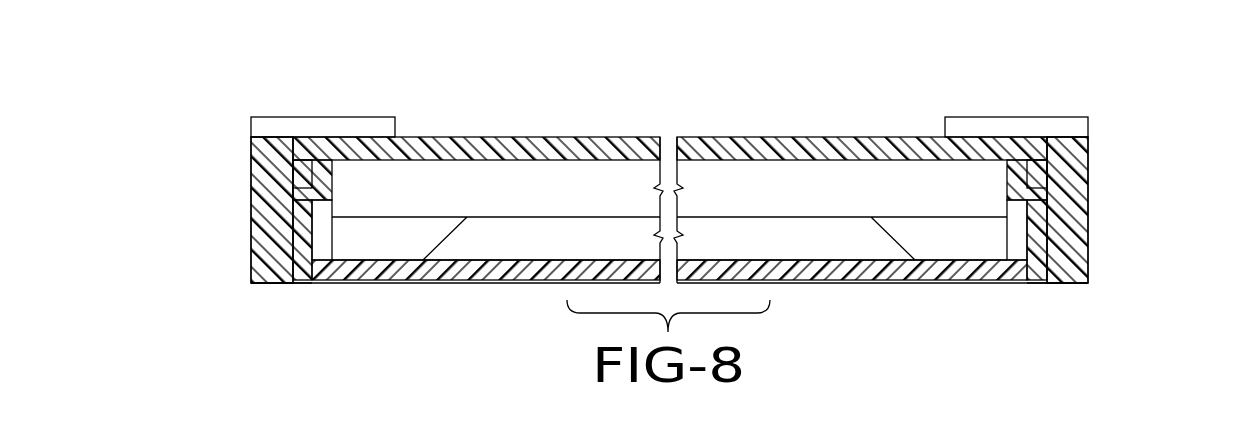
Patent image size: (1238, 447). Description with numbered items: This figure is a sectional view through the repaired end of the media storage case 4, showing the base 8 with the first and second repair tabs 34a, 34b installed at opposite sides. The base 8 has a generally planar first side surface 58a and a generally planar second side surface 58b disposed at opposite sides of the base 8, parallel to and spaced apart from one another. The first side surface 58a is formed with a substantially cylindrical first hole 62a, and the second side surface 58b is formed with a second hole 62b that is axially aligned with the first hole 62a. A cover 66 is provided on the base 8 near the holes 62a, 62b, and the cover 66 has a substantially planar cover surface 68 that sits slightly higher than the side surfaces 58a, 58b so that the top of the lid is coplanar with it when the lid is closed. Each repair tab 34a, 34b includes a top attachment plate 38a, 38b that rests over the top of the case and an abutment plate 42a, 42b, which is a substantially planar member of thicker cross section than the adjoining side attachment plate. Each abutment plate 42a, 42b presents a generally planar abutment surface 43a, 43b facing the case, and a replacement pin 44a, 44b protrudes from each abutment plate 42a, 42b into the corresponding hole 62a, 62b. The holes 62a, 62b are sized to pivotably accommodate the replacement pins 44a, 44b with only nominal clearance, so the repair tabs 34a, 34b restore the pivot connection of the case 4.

The media storage case 4 is at (380, 315).
The base 8 is at (490, 300).
The first repair tab 34a is at (272, 100).
The second repair tab 34b is at (1066, 100).
The top attachment plate 38a is at (358, 120).
The top attachment plate 38b is at (985, 120).
The abutment plate 42a is at (262, 149).
The abutment plate 42b is at (1080, 152).
The abutment surface 43a is at (295, 266).
The abutment surface 43b is at (1043, 266).
The replacement pin 44a is at (318, 227).
The replacement pin 44b is at (1030, 226).
The first side surface 58a is at (294, 262).
The second side surface 58b is at (1046, 263).
The first hole 62a is at (300, 194).
The second hole 62b is at (1050, 196).
The cover 66 is at (480, 143).
The cover surface 68 is at (585, 140).